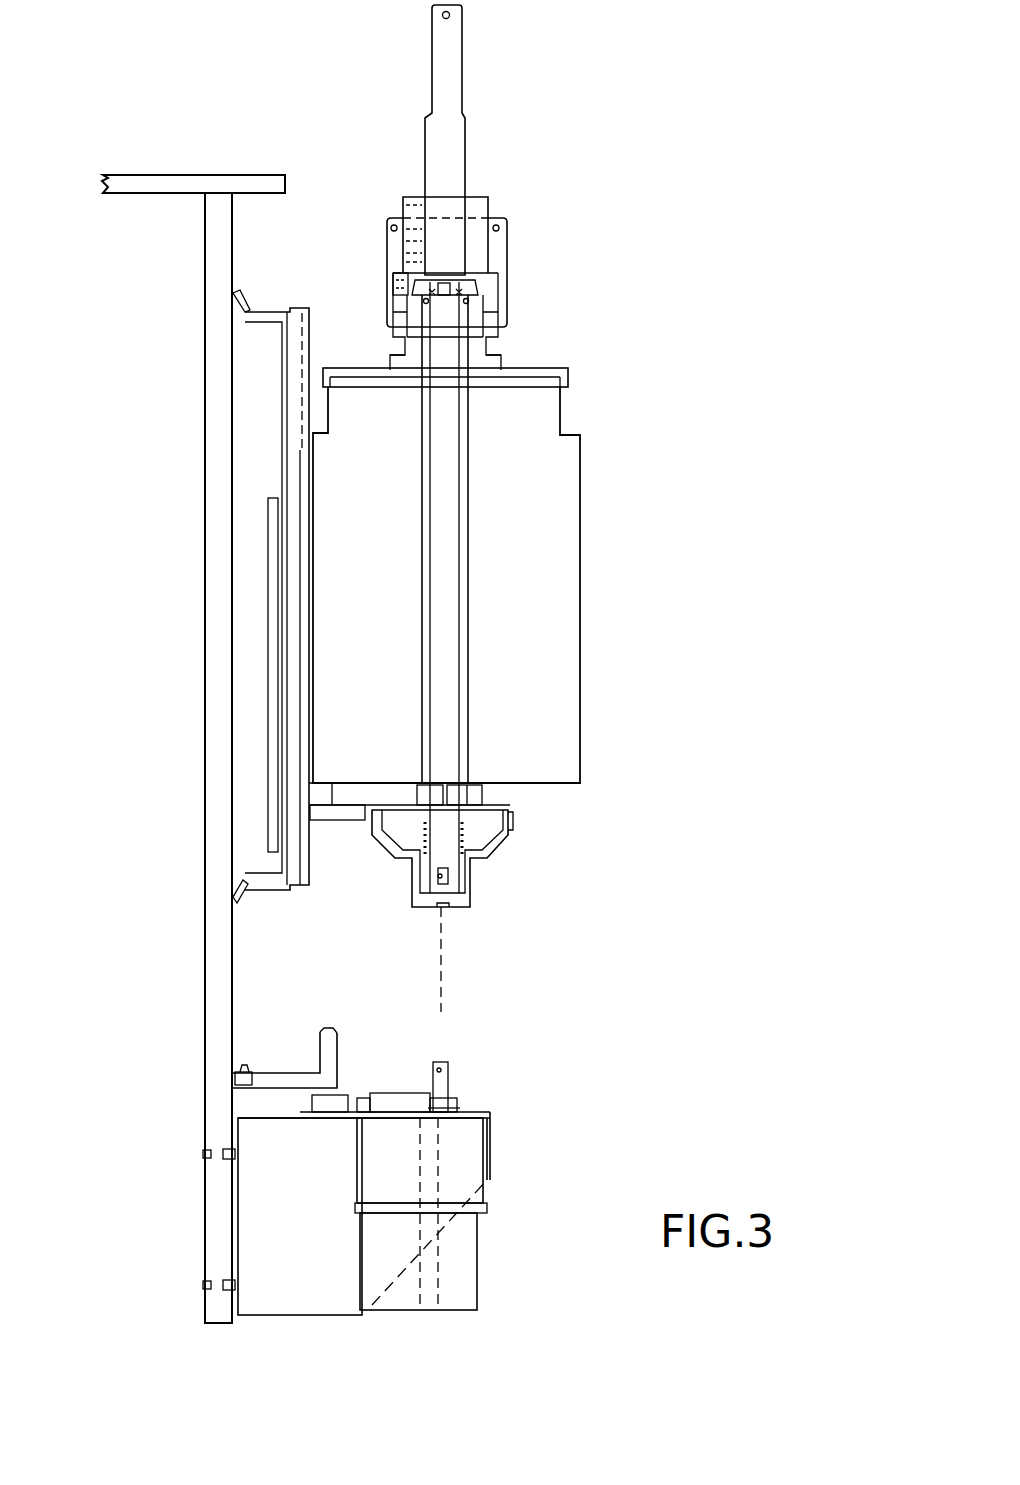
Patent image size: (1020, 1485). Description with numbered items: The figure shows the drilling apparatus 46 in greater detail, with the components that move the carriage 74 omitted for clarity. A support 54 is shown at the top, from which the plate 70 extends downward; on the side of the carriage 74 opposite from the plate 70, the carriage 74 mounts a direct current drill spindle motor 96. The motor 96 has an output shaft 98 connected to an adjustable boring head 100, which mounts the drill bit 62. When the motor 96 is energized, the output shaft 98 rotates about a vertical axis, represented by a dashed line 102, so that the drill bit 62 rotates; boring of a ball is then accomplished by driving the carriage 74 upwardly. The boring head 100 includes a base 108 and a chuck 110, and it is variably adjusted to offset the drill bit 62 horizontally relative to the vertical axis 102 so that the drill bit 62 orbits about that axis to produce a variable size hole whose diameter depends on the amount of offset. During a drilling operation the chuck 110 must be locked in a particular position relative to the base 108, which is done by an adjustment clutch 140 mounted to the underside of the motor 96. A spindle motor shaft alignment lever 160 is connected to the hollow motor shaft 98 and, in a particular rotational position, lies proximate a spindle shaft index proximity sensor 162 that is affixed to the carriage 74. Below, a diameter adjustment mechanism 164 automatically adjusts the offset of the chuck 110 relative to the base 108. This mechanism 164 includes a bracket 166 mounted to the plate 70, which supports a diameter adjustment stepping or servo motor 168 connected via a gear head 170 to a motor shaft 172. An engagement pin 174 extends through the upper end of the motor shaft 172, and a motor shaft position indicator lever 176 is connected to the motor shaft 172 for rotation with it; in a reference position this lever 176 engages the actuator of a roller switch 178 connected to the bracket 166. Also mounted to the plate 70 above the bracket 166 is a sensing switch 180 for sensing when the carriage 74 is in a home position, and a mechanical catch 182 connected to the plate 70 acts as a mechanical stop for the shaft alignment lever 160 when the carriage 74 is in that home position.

The drilling apparatus 46 is at (657, 470).
The support plate 54 is at (163, 182).
The drill bit 62 is at (431, 60).
The plate 70 is at (222, 240).
The carriage 74 is at (300, 878).
The direct current drill spindle motor 96 is at (568, 665).
The output shaft 98 is at (466, 400).
The adjustable boring head 100 is at (505, 258).
The vertical axis 102 is at (442, 928).
The base 108 is at (485, 296).
The chuck 110 is at (483, 207).
The adjustment clutch 140 is at (518, 823).
The spindle motor shaft alignment lever 160 is at (365, 794).
The spindle shaft index proximity sensor 162 is at (322, 788).
The diameter adjustment mechanism 164 is at (438, 1170).
The bracket 166 is at (297, 1285).
The lower cylinder 168 is at (468, 1270).
The gear head 170 is at (487, 1200).
The motor shaft 172 is at (445, 1083).
The engagement pin 174 is at (447, 1062).
The motor shaft position indicator lever 176 is at (388, 1102).
The roller switch 178 is at (340, 1100).
The sensing switch 180 is at (233, 1070).
The mechanical catch 182 is at (325, 1057).